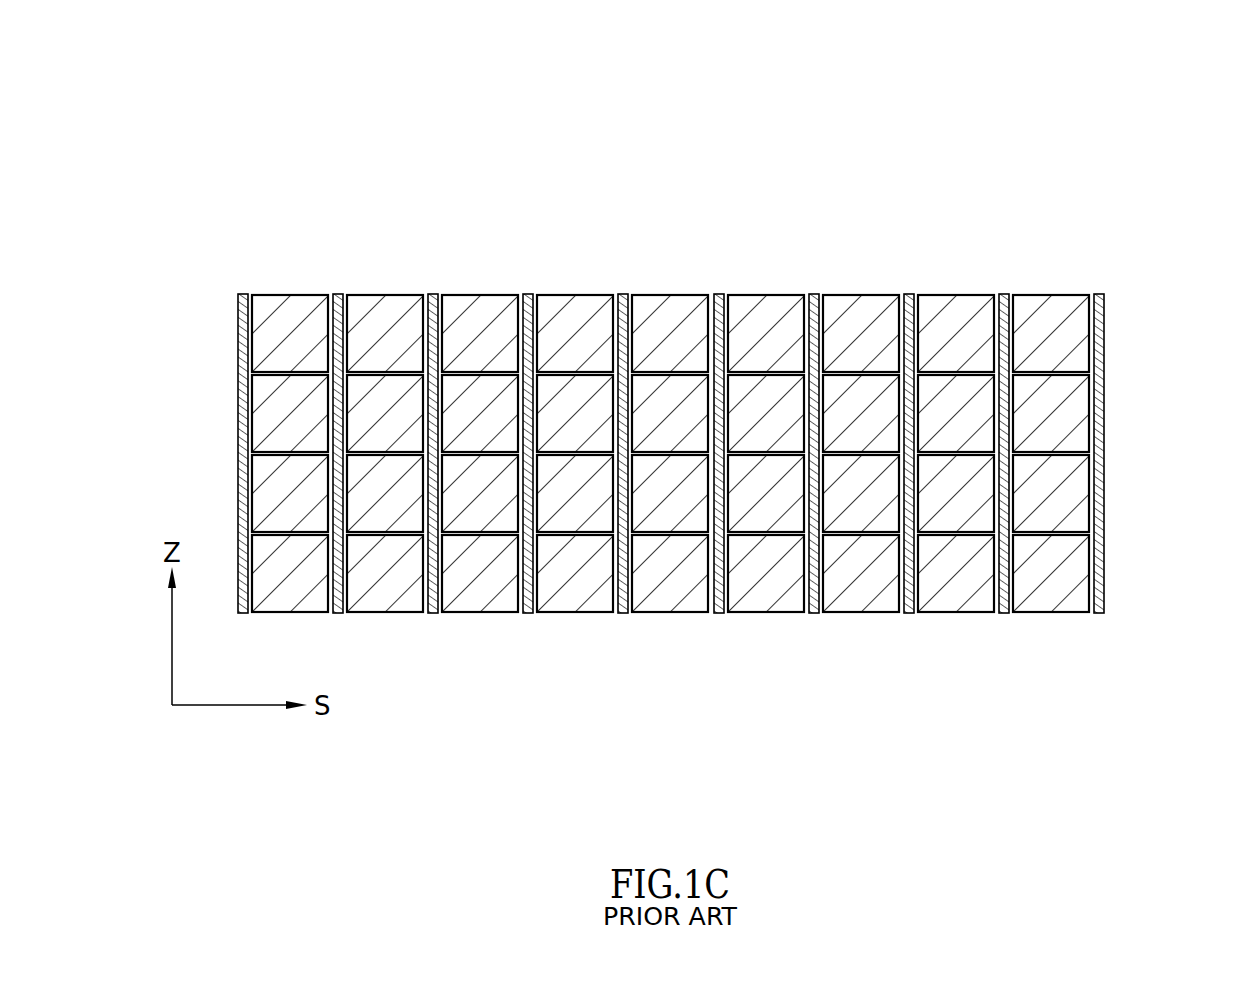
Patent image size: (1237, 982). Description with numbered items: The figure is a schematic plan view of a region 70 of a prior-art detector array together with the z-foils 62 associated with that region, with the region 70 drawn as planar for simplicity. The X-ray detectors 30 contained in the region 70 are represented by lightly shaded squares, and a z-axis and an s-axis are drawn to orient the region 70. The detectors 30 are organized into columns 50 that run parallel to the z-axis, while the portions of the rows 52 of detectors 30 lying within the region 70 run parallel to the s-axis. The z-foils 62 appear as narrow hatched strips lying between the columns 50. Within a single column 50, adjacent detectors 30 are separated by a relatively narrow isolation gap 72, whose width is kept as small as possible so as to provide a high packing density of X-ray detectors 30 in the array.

The region 70 is at (948, 80).
The z-foils 62 is at (243, 294).
The columns 50 is at (491, 262).
The isolation gap 72 is at (783, 447).
The X-ray detectors 30 is at (482, 412).
The rows 52 is at (1132, 327).